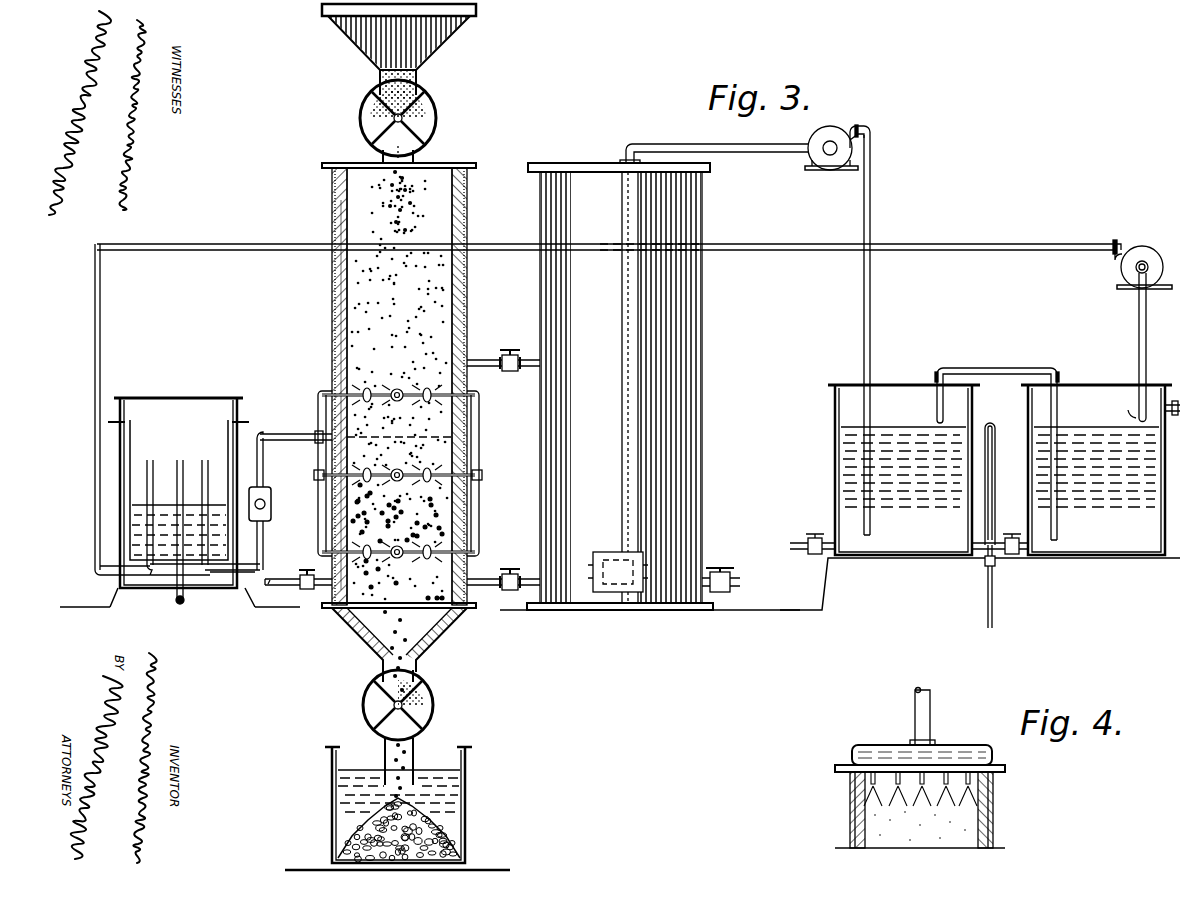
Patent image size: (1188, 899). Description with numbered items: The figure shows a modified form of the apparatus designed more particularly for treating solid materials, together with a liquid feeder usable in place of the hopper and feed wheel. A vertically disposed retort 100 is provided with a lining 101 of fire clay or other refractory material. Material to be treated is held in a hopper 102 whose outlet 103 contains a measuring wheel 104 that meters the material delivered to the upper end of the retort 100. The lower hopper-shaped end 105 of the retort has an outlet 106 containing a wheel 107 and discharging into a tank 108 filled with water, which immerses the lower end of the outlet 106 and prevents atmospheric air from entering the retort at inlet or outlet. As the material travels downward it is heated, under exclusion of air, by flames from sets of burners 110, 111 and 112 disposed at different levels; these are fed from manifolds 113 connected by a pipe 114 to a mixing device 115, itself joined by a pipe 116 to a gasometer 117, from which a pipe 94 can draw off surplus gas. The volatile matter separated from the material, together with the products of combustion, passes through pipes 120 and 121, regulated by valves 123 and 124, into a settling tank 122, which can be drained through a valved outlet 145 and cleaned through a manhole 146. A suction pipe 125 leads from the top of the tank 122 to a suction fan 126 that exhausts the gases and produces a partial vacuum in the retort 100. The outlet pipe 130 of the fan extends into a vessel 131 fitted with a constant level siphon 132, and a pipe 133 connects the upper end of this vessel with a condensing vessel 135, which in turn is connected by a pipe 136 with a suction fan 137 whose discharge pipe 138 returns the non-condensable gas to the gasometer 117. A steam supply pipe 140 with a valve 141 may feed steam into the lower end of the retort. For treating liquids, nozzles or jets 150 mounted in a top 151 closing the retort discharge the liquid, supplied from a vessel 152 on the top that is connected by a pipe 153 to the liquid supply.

In FIG. 3, the pipe 94 is at (185, 440).
In FIG. 3, the retort 100 is at (333, 300).
In FIG. 4, the retort 100 is at (848, 832).
In FIG. 3, the tower lining 101 is at (338, 330).
In FIG. 3, the hopper 102 is at (440, 40).
In FIG. 3, the outlet 103 is at (378, 78).
In FIG. 3, the measuring wheel 104 is at (376, 123).
In FIG. 3, the lower hopper-shaped end 105 is at (446, 640).
In FIG. 3, the outlet 106 is at (383, 742).
In FIG. 3, the wheel 107 is at (375, 706).
In FIG. 3, the tank 108 is at (450, 755).
In FIG. 3, the burners 110 is at (336, 392).
In FIG. 3, the burners 111 is at (330, 478).
In FIG. 3, the burners 112 is at (300, 580).
In FIG. 3, the manifolds 113 is at (322, 468).
In FIG. 3, the pipe 114 is at (292, 422).
In FIG. 3, the mixing device 115 is at (272, 515).
In FIG. 3, the pipe 116 is at (228, 578).
In FIG. 3, the gasometer 117 is at (192, 405).
In FIG. 3, the pipe 120 is at (478, 362).
In FIG. 3, the pipe 121 is at (483, 570).
In FIG. 3, the settling tank 122 is at (703, 416).
In FIG. 3, the valve 123 is at (507, 372).
In FIG. 3, the valve 124 is at (513, 568).
In FIG. 3, the suction pipe 125 is at (688, 145).
In FIG. 3, the suction fan 126 is at (830, 138).
In FIG. 3, the outlet pipe 130 is at (873, 218).
In FIG. 3, the vessel 131 is at (845, 410).
In FIG. 3, the constant level siphon 132 is at (996, 490).
In FIG. 3, the pipe 133 is at (1010, 365).
In FIG. 3, the condensing vessel 135 is at (1095, 397).
In FIG. 3, the suction pipe to pump 136 is at (1150, 340).
In FIG. 3, the suction fan 137 is at (1128, 268).
In FIG. 3, the discharge pipe 138 is at (975, 252).
In FIG. 3, the steam supply pipe 140 is at (276, 586).
In FIG. 3, the valve 141 is at (305, 590).
In FIG. 3, the valved outlet 145 is at (742, 582).
In FIG. 3, the manhole 146 is at (620, 590).
In FIG. 4, the nozzles or jets 150 is at (880, 783).
In FIG. 4, the top 151 is at (972, 770).
In FIG. 4, the vessel 152 is at (870, 747).
In FIG. 4, the pipe 153 is at (935, 705).